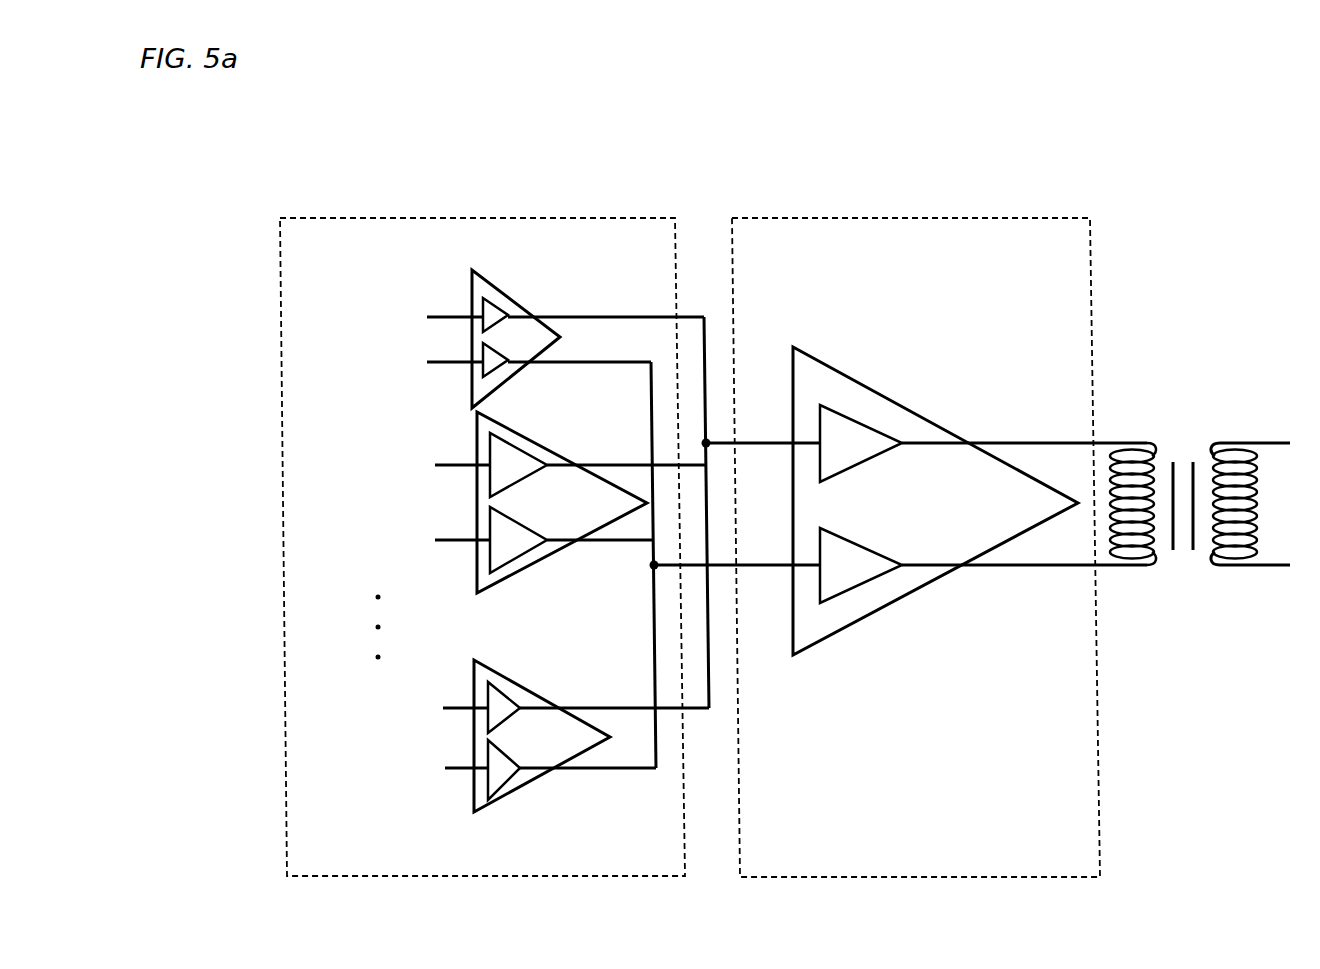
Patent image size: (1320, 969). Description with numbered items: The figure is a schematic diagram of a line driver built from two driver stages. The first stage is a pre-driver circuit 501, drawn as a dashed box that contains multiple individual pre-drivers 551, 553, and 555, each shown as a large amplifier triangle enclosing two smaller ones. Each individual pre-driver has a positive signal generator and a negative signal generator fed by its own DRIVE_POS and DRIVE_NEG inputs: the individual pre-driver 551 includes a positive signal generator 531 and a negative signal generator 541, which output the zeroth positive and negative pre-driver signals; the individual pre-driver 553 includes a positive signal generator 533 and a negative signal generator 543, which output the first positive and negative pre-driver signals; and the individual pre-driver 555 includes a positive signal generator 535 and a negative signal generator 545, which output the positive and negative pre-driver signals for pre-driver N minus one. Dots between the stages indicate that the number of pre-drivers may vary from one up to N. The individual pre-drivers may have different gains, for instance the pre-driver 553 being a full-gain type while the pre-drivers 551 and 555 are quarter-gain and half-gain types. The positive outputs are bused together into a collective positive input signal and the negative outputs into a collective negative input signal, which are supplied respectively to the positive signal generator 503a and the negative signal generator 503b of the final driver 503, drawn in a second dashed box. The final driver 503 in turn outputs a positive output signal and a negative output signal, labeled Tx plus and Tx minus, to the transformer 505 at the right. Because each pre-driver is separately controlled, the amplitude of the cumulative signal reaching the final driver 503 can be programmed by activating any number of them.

The pre-driver circuit 501 is at (473, 218).
The final driver 503 is at (908, 218).
The positive signal generator 503a is at (877, 457).
The negative signal generator 503b is at (877, 580).
The transformer 505 is at (1183, 422).
The positive signal generator 531 is at (493, 303).
The negative signal generator 541 is at (503, 373).
The individual pre-driver 551 is at (523, 298).
The positive signal generator 533 is at (518, 443).
The negative signal generator 543 is at (520, 557).
The individual pre-driver 553 is at (547, 442).
The positive signal generator 535 is at (505, 695).
The negative signal generator 545 is at (505, 793).
The individual pre-driver 555 is at (533, 682).